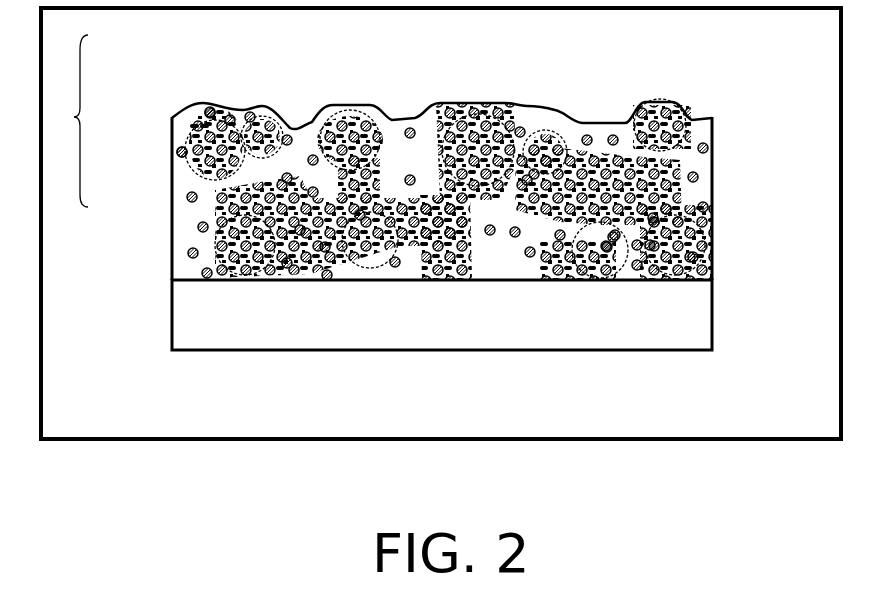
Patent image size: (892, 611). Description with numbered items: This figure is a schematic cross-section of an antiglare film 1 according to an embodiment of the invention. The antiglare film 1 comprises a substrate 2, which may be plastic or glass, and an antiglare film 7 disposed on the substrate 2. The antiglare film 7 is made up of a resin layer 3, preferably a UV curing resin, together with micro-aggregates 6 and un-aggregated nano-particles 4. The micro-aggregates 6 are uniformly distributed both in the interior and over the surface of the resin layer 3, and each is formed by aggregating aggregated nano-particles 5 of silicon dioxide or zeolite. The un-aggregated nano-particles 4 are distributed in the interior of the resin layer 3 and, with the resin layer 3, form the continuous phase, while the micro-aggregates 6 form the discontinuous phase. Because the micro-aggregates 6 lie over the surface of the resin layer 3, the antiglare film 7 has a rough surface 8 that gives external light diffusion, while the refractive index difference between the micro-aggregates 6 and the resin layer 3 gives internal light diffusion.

The antiglare film 1 is at (160, 368).
The substrate 2 is at (180, 312).
The resin layer 3 is at (182, 184).
The un-aggregated nano-particles 4 is at (177, 152).
The aggregated nano-particles 5 is at (195, 126).
The micro-aggregates 6 is at (197, 118).
The antiglare film 7 is at (68, 121).
The rough surface 8 is at (300, 130).